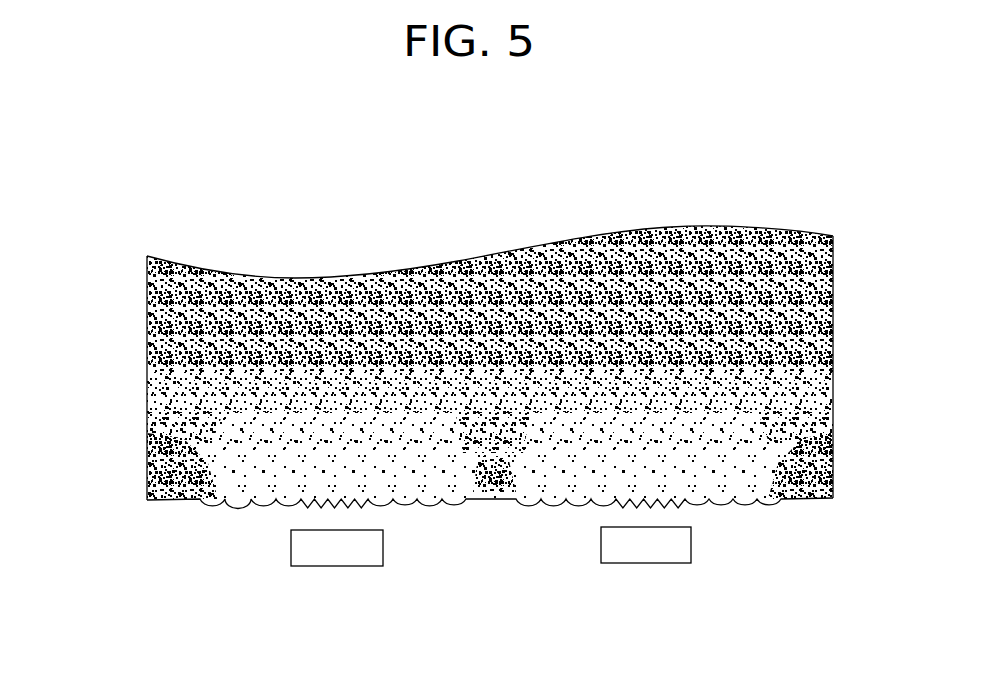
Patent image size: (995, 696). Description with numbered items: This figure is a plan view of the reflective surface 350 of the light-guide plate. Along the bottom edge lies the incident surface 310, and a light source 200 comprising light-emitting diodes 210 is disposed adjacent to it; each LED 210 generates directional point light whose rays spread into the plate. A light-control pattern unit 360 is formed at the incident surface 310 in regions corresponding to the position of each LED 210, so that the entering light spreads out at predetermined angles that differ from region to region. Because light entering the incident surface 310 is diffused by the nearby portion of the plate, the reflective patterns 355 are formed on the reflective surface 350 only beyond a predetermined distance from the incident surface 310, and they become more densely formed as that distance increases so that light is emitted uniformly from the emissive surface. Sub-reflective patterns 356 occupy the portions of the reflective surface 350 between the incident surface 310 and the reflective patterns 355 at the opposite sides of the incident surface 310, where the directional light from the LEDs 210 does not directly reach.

The light source 200 is at (297, 563).
The light-emitting diode 210 is at (658, 548).
The incident surface 310 is at (805, 490).
The reflective surface 350 is at (443, 400).
The reflective patterns 355 is at (488, 246).
The sub-reflective patterns 356 is at (139, 492).
The light-control pattern unit 360 is at (243, 508).